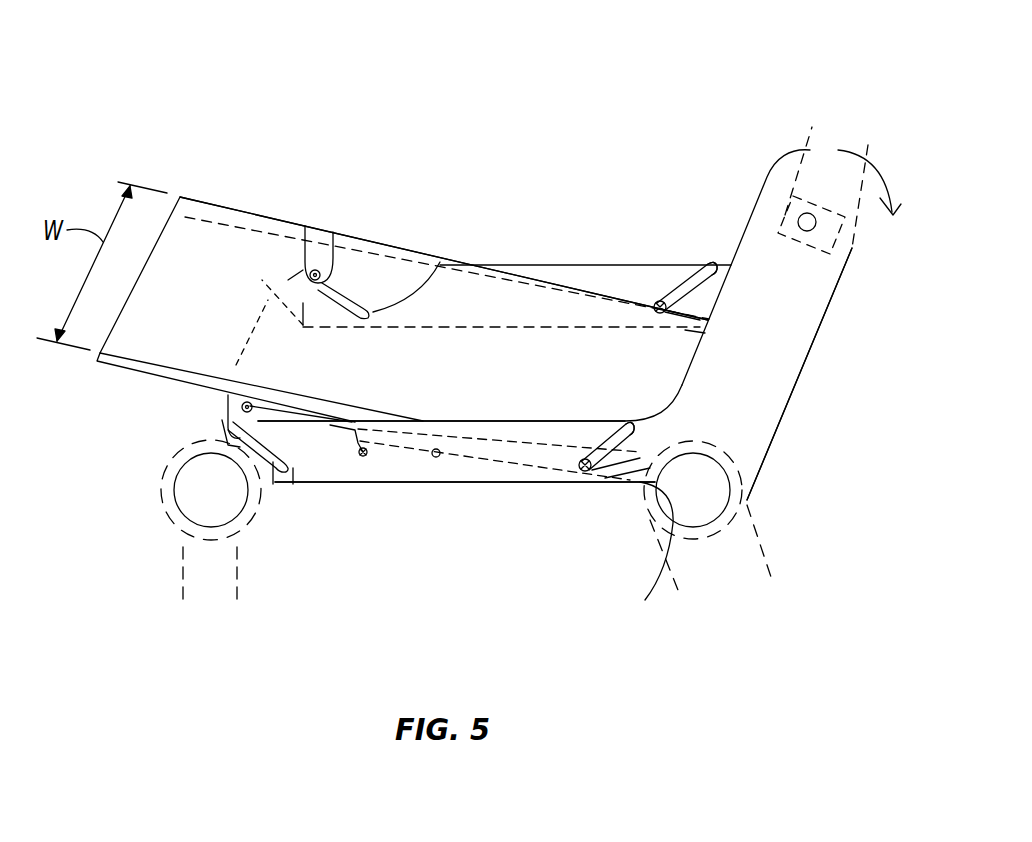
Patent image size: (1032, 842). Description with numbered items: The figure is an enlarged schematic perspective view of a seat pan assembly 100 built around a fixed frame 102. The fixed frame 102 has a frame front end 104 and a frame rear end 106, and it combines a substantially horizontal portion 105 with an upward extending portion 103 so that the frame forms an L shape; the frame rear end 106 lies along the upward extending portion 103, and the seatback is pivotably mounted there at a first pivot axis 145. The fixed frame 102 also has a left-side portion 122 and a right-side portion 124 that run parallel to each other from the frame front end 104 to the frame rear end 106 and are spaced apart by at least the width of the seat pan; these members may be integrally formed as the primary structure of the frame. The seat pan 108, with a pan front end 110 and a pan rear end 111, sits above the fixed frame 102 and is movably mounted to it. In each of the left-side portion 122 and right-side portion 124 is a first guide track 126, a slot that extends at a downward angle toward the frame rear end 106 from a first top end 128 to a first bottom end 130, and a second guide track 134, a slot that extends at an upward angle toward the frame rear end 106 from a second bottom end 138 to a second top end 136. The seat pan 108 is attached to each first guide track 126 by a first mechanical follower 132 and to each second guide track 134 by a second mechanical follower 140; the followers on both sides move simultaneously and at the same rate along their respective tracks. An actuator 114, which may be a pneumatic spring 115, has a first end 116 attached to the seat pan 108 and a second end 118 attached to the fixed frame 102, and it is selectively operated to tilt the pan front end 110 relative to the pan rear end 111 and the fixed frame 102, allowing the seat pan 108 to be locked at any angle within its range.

The seat pan assembly 100 is at (303, 82).
The fixed frame 102 is at (543, 482).
The upward extending portion 103 is at (790, 310).
The frame front end 104 is at (213, 425).
The horizontal portion 105 is at (498, 467).
The frame rear end 106 is at (763, 410).
The seat pan 108 is at (147, 293).
The pan front end 110 is at (100, 355).
The pan rear end 111 is at (698, 536).
The actuator 114 is at (330, 430).
The pneumatic spring 115 is at (363, 452).
The first end 116 is at (260, 400).
The second end 118 is at (180, 367).
The left-side portion 122 is at (498, 421).
The right-side portion 124 is at (625, 268).
The first guide track 126 is at (342, 293).
The first top end 128 is at (290, 280).
The first bottom end 130 is at (410, 293).
The first mechanical follower 132 is at (327, 277).
The second guide track 134 is at (683, 287).
The second top end 136 is at (712, 263).
The second bottom end 138 is at (658, 317).
The second mechanical follower 140 is at (655, 300).
The first pivot axis 145 is at (815, 222).